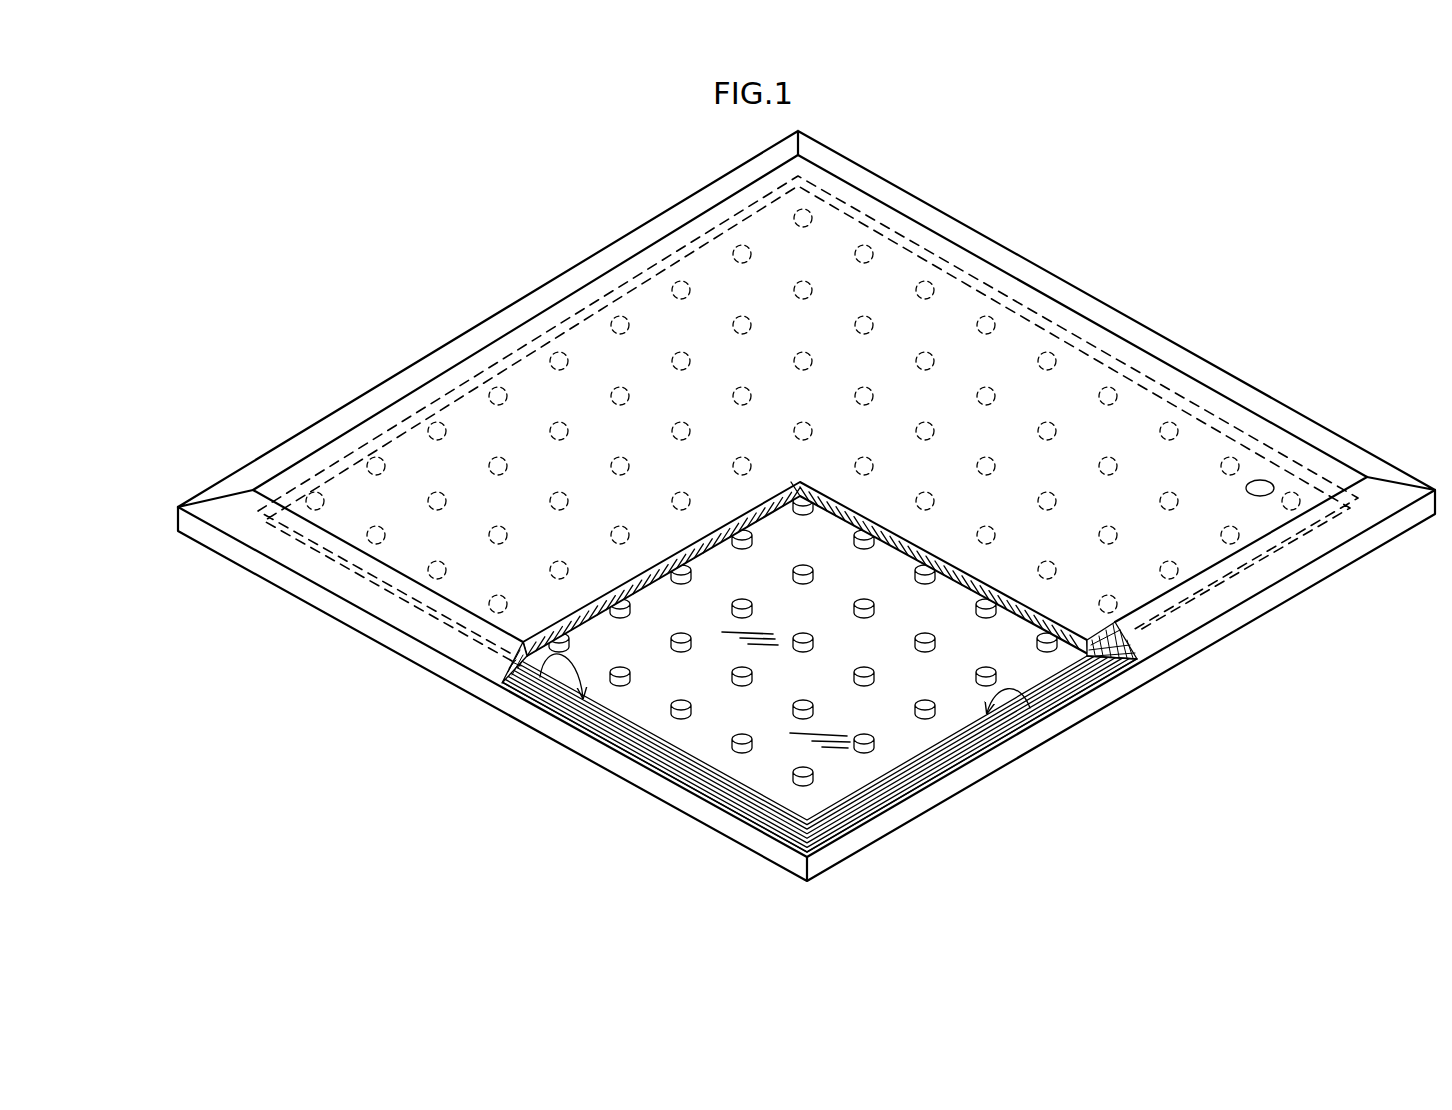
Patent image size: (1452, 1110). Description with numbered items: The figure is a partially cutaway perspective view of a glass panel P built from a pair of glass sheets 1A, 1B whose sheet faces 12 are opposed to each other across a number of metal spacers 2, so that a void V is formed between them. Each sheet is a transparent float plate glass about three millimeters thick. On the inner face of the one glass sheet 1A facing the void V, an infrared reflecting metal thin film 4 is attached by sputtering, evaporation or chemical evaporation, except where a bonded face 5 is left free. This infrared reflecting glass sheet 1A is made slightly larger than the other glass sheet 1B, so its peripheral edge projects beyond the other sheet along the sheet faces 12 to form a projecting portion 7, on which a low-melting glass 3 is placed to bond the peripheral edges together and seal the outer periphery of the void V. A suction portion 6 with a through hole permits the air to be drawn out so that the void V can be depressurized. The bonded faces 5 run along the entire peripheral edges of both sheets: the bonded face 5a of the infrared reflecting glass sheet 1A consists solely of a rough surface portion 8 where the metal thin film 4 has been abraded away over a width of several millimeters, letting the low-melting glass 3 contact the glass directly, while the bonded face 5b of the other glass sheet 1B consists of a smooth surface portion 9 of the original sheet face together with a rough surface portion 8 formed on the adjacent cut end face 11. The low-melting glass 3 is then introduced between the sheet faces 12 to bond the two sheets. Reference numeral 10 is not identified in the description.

The glass panel P is at (1198, 235).
The infrared reflecting glass sheet 1A is at (463, 678).
The glass sheet 1B is at (588, 298).
The metal spacers 2 is at (552, 358).
The low-melting glass 3 is at (332, 570).
The infrared reflecting metal thin film 4 is at (779, 532).
The bonded face 5 is at (910, 737).
The bonded face of the infrared reflecting glass sheet 5a is at (530, 697).
The bonded face of the other glass sheet 5b is at (1250, 740).
The suction portion 6 is at (1268, 481).
The projecting portion 7 is at (752, 837).
The rough surface portion 8 is at (620, 722).
The smooth surface portion 9 is at (1085, 690).
The edge line 10 is at (708, 783).
The cut end face 11 is at (1122, 622).
The sheet faces 12 is at (884, 572).
The void V is at (1193, 600).